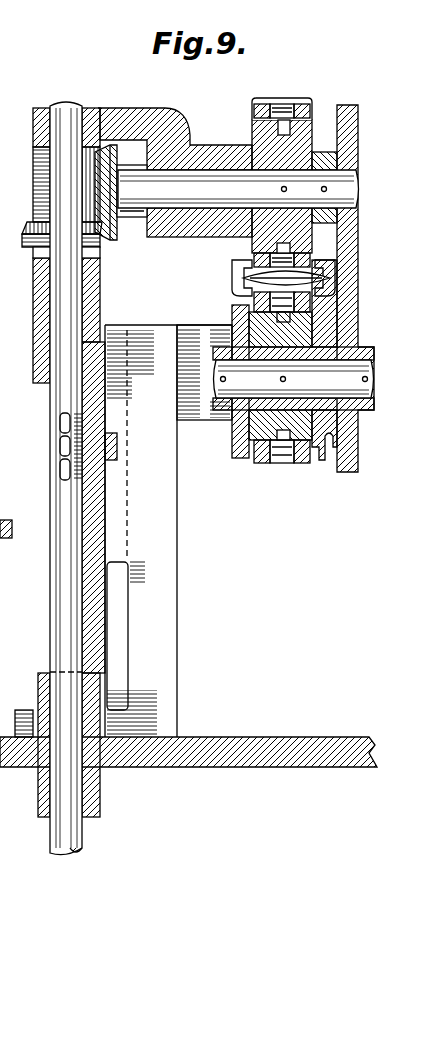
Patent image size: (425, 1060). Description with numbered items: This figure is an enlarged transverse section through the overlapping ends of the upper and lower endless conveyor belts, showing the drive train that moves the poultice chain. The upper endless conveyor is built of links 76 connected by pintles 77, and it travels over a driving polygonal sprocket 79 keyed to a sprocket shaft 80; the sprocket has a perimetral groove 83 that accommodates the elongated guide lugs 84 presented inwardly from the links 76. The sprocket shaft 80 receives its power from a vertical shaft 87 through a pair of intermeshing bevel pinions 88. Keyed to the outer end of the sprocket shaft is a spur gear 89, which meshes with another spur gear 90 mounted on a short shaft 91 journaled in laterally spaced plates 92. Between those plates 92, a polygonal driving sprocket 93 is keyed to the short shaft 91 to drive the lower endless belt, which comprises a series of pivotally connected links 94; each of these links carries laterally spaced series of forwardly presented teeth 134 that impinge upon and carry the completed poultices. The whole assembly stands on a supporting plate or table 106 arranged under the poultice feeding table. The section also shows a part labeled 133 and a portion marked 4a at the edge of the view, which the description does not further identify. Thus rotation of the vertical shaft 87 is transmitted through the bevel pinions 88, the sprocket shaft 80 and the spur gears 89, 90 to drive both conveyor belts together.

The links 76 is at (274, 104).
The pintles 77 is at (256, 104).
The driving polygonal sprocket 79 is at (300, 133).
The sprocket shaft 80 is at (345, 185).
The perimetral groove 83 is at (284, 137).
The guide lugs 84 is at (287, 118).
The vertical shaft 87 is at (66, 638).
The bevel pinions 88 is at (113, 238).
The spur gear 89 is at (350, 143).
The spur gear 90 is at (348, 327).
The short shaft 91 is at (371, 386).
The plates 92 is at (240, 449).
The polygonal driving sprocket 93 is at (264, 461).
The links 94 is at (316, 298).
The supporting plate or table 106 is at (270, 748).
The clutch cup 133 is at (336, 268).
The teeth 134 is at (250, 298).
The bracket 4a is at (8, 176).